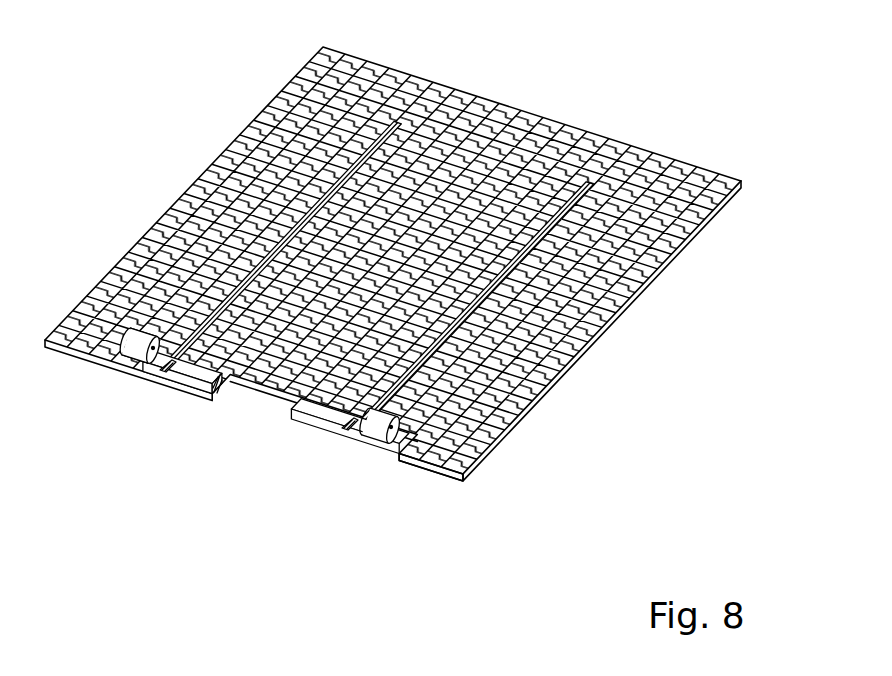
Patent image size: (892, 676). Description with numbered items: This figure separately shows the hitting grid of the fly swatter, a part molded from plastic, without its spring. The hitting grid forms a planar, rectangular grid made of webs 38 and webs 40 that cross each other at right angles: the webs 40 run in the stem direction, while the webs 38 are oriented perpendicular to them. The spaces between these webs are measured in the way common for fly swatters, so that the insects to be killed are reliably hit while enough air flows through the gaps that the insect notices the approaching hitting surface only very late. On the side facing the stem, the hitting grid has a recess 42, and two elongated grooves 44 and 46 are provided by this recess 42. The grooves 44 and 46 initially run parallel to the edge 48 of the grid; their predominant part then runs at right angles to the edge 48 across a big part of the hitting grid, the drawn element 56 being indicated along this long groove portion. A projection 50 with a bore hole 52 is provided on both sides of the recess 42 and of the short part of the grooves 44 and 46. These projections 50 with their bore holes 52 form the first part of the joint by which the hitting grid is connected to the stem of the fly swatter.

The webs 38 is at (620, 315).
The webs 40 is at (615, 300).
The recess 42 is at (256, 403).
The groove 44 is at (185, 389).
The groove 46 is at (327, 432).
The edge 48 is at (423, 463).
The projection 50 is at (370, 423).
The bore hole 52 is at (392, 445).
The guide slot 56 is at (527, 250).